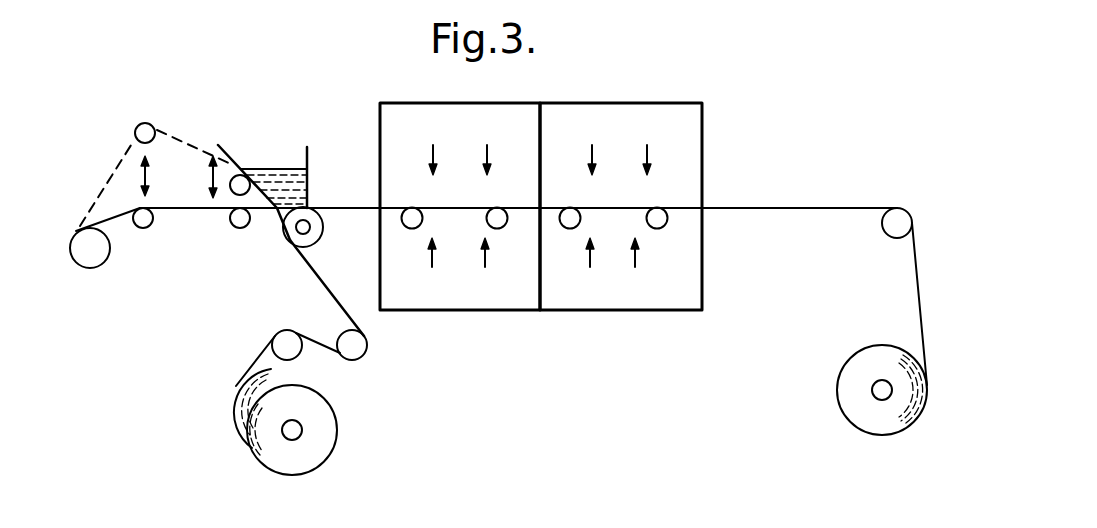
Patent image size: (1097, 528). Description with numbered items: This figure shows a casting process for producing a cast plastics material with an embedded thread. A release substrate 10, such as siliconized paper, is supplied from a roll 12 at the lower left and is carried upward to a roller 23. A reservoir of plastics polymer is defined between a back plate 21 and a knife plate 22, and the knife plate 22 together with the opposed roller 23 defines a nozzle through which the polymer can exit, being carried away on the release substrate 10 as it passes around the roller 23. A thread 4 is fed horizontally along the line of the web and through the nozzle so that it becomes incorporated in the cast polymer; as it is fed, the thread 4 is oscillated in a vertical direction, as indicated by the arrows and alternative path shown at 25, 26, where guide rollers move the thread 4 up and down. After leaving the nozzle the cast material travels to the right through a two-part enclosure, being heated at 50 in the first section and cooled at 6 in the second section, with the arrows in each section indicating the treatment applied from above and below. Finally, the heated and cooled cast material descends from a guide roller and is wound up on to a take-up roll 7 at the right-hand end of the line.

The thread 4 is at (193, 210).
The cooling station 6 is at (642, 312).
The take-up roll 7 is at (868, 431).
The release substrate 10 is at (317, 283).
The roll 12 is at (227, 422).
The back plate 21 is at (263, 210).
The knife plate 22 is at (308, 168).
The roller 23 is at (313, 227).
The oscillation position 25 is at (143, 178).
The oscillation position 26 is at (208, 181).
The heating station 50 is at (510, 312).